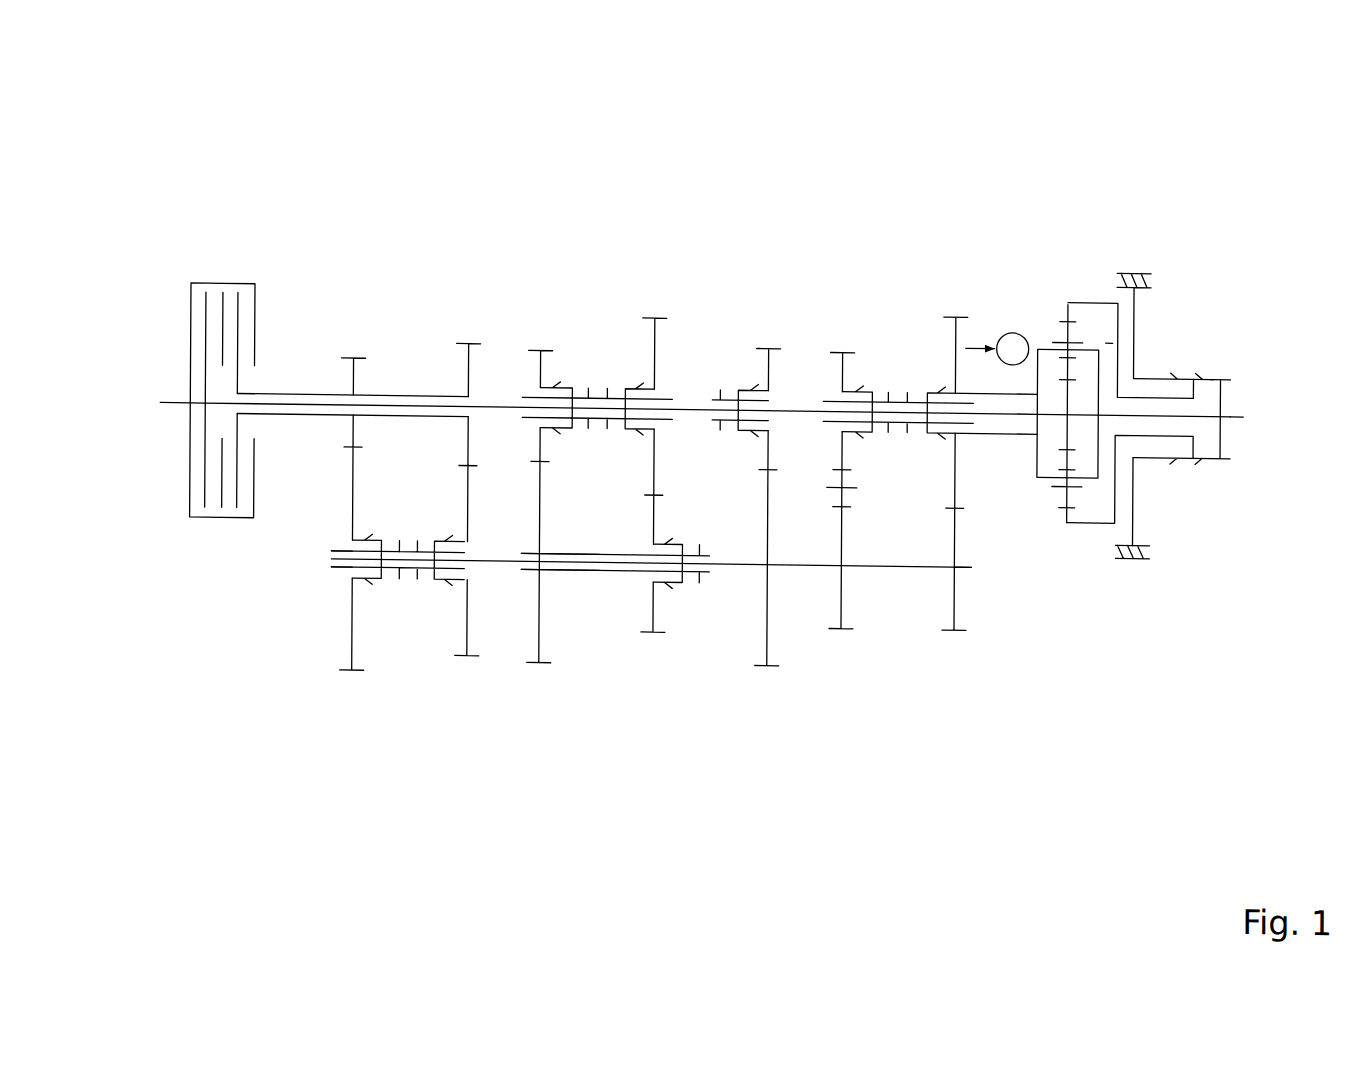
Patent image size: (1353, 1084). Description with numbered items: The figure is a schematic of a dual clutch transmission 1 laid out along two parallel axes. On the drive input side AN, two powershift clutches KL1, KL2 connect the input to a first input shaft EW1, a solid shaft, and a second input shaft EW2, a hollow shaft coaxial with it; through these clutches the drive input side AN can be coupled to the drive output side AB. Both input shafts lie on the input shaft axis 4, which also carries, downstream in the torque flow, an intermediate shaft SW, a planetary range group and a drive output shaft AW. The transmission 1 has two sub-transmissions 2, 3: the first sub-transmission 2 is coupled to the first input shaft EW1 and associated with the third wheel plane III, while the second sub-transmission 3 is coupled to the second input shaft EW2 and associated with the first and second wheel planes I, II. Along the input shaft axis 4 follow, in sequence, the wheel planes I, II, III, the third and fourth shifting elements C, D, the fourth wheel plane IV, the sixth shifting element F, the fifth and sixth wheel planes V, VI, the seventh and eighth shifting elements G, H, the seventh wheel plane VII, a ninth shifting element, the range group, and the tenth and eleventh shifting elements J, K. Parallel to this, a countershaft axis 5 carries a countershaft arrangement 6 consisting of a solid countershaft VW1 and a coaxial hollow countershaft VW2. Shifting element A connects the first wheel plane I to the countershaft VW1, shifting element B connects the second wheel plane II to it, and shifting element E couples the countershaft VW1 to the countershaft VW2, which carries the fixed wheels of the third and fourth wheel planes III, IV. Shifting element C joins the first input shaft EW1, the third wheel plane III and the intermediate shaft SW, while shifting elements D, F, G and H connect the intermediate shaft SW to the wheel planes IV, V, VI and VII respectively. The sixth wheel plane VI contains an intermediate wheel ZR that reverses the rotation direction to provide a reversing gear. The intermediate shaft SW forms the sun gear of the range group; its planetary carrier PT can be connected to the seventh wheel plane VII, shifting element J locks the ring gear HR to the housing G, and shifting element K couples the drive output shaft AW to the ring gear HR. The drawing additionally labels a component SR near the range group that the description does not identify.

The dual clutch transmission 1 is at (1226, 230).
The first sub-transmission 2 is at (587, 175).
The second sub-transmission 3 is at (415, 175).
The input shaft axis 4 is at (1260, 403).
The countershaft axis 5 is at (970, 557).
The countershaft arrangement 6 is at (330, 560).
The first clutch KL1 is at (207, 277).
The second clutch KL2 is at (238, 277).
The drive input side AN is at (156, 376).
The first input shaft EW1 is at (217, 399).
The second input shaft EW2 is at (310, 412).
The first countershaft VW1 is at (883, 561).
The second countershaft VW2 is at (582, 570).
The intermediate wheel ZR is at (822, 494).
The intermediate shaft SW is at (1045, 332).
The ring gear HR is at (1061, 306).
The planetary carrier PT is at (1079, 331).
The housing G is at (1134, 261).
The spur gear SR is at (1137, 449).
The drive output side AB is at (1254, 375).
The drive output shaft AW is at (1233, 409).
The first wheel plane I is at (354, 324).
The second wheel plane II is at (469, 328).
The third wheel plane III is at (541, 240).
The fourth wheel plane IV is at (656, 244).
The fifth wheel plane V is at (770, 242).
The sixth wheel plane VI is at (843, 242).
The seventh wheel plane VII is at (956, 242).
The first shifting element A is at (430, 710).
The second shifting element B is at (431, 632).
The third shifting element C is at (620, 272).
The fourth shifting element D is at (622, 347).
The fifth shifting element E is at (710, 709).
The sixth shifting element F is at (712, 271).
The eighth shifting element H is at (921, 271).
The tenth shifting element J is at (1211, 305).
The eleventh shifting element K is at (1229, 341).